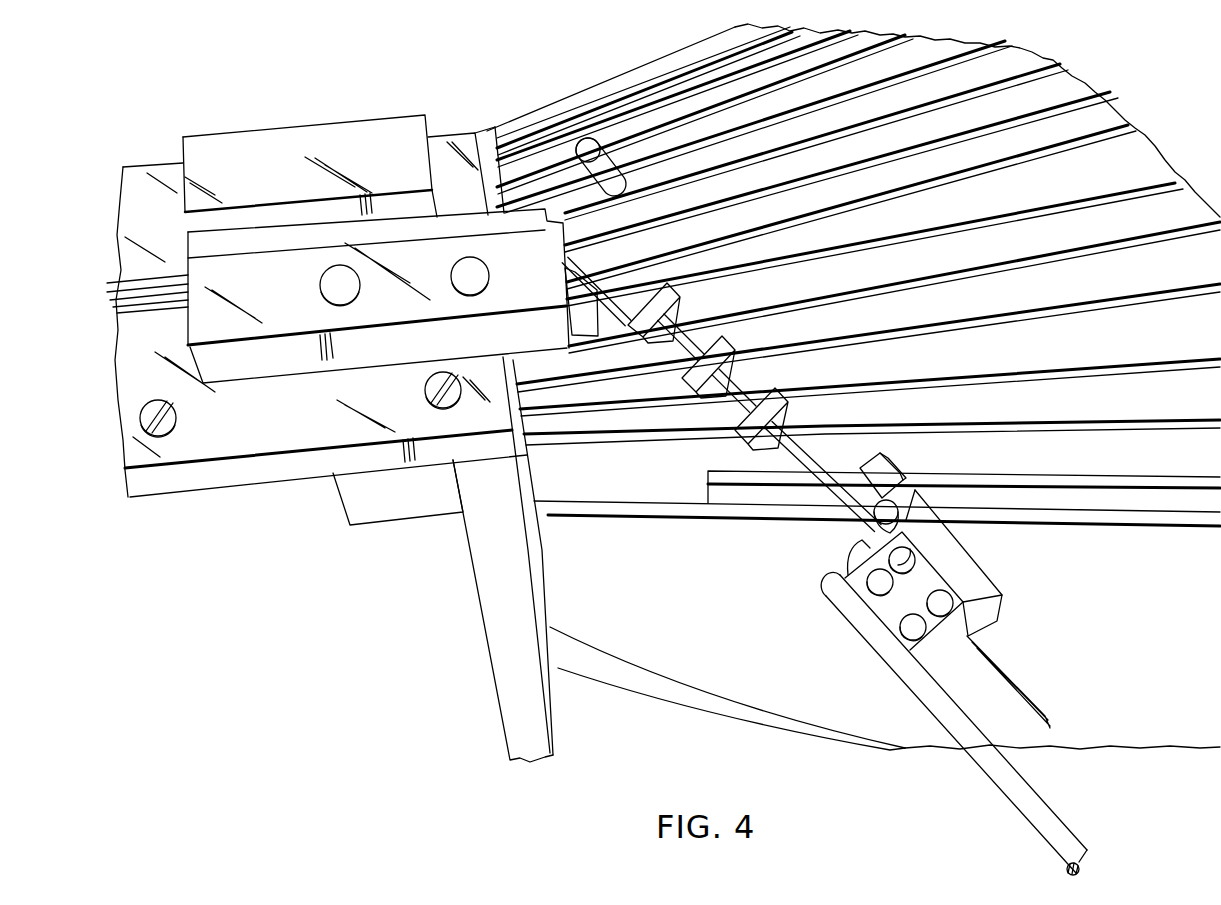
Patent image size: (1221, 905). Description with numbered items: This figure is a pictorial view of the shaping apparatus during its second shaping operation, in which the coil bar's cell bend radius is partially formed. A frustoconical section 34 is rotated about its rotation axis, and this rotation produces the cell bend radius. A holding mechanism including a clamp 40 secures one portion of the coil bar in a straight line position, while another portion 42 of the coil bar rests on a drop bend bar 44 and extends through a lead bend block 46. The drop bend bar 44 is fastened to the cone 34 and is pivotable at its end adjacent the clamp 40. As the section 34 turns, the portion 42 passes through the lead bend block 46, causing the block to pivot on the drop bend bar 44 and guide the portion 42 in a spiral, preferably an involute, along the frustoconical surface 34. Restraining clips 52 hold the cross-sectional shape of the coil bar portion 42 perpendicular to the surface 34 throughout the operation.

The frustoconical section 34 is at (631, 68).
The clamp 40 is at (203, 330).
The portion of coil bar 42 is at (750, 400).
The drop bend bar 44 is at (1047, 503).
The lead bend block 46 is at (980, 577).
The restraining clips 52 is at (673, 305).